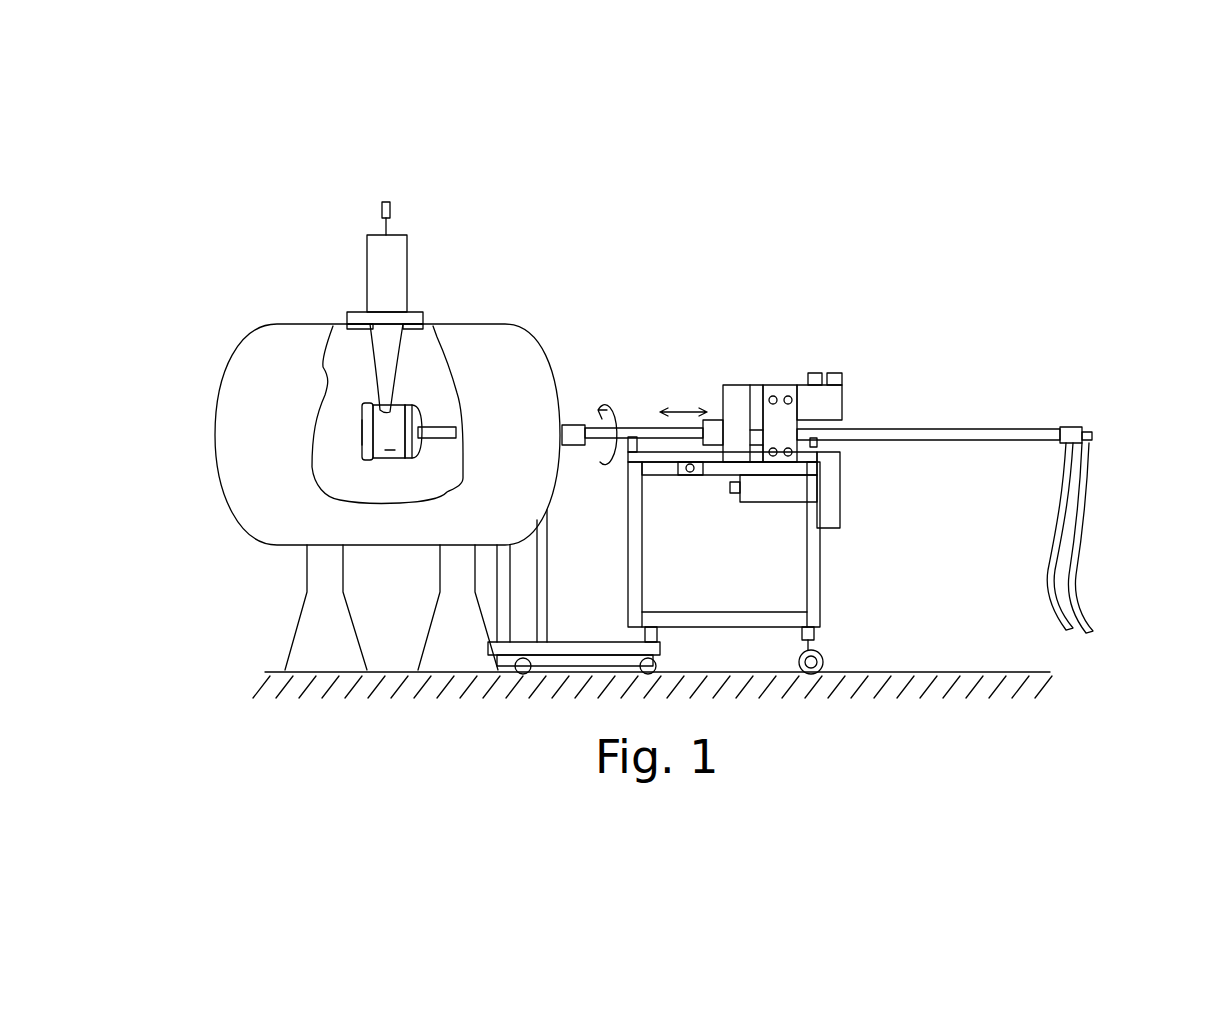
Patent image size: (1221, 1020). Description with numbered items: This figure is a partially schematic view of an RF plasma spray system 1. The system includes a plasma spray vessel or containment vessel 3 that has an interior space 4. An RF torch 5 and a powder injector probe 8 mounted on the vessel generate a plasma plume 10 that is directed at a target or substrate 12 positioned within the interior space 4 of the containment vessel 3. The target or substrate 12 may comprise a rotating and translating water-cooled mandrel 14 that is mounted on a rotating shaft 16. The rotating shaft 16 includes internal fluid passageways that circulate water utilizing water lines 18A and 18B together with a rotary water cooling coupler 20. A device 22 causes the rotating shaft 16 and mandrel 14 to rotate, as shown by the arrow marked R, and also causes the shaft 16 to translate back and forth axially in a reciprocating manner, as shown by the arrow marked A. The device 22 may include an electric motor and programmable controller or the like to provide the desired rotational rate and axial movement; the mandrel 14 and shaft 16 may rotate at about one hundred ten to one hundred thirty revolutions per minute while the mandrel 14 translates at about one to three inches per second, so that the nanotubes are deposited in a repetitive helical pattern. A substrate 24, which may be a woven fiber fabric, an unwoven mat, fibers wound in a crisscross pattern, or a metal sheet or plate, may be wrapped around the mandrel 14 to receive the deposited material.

The RF plasma spray system 1 is at (822, 278).
The containment vessel 3 is at (538, 343).
The interior space 4 is at (427, 362).
The RF torch 5 is at (407, 275).
The powder injector probe 8 is at (392, 210).
The plasma plume 10 is at (383, 353).
The target or substrate 12 is at (380, 458).
The water-cooled mandrel 14 is at (362, 433).
The rotating shaft 16 is at (652, 427).
The water line 18A is at (1062, 523).
The water line 18B is at (1088, 500).
The rotary water cooling coupler 20 is at (1067, 427).
The device 22 is at (786, 381).
The substrate 24 is at (392, 450).